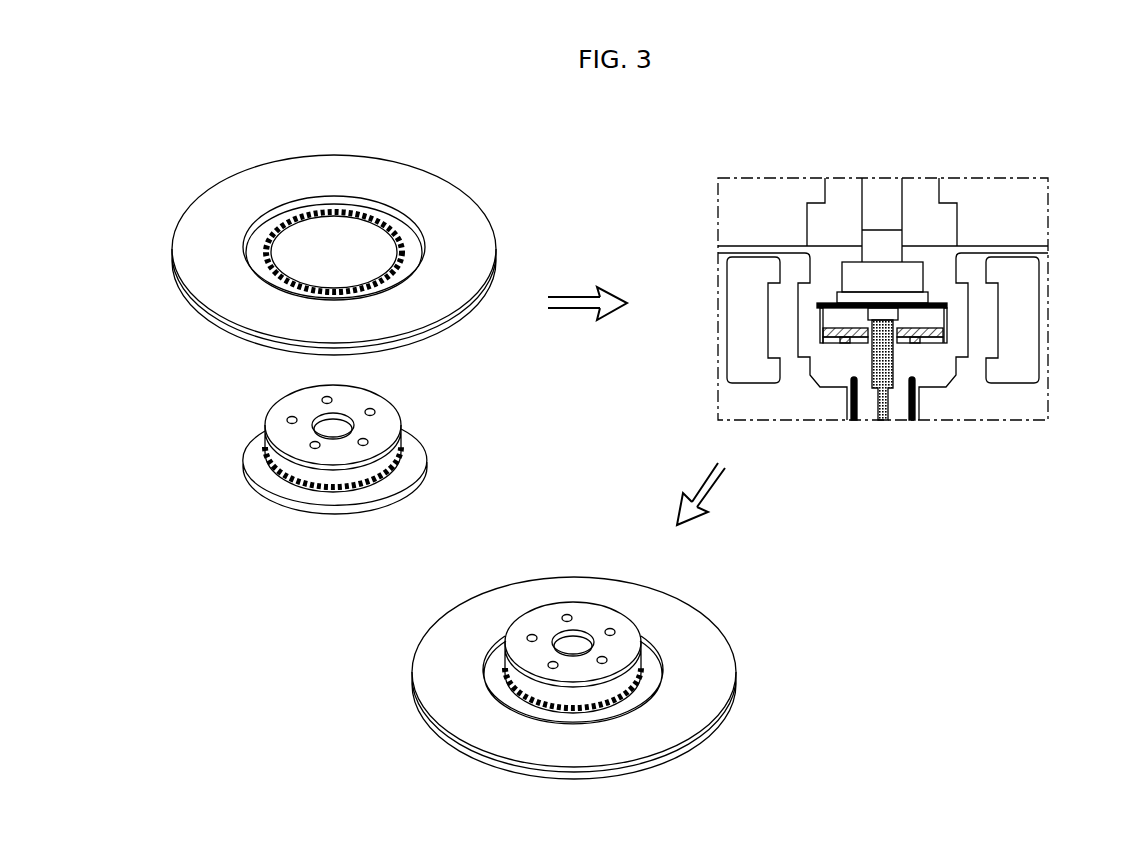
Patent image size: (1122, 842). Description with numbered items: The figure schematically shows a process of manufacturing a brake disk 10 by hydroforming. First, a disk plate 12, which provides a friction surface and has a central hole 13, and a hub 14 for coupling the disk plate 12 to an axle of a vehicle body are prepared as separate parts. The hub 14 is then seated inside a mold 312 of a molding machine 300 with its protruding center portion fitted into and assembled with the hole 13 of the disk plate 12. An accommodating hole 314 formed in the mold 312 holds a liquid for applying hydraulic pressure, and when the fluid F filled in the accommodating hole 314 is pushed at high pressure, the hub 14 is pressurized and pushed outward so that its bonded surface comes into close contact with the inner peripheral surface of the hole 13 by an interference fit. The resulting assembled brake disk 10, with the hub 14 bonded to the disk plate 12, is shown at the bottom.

The brake disk 10 is at (146, 365).
The disk plate 12 is at (197, 211).
The hole 13 is at (318, 243).
The hub 14 is at (270, 452).
The molding machine 300 is at (735, 227).
The mold 312 is at (955, 322).
The accommodating hole 314 is at (900, 365).
The fluid F is at (896, 350).